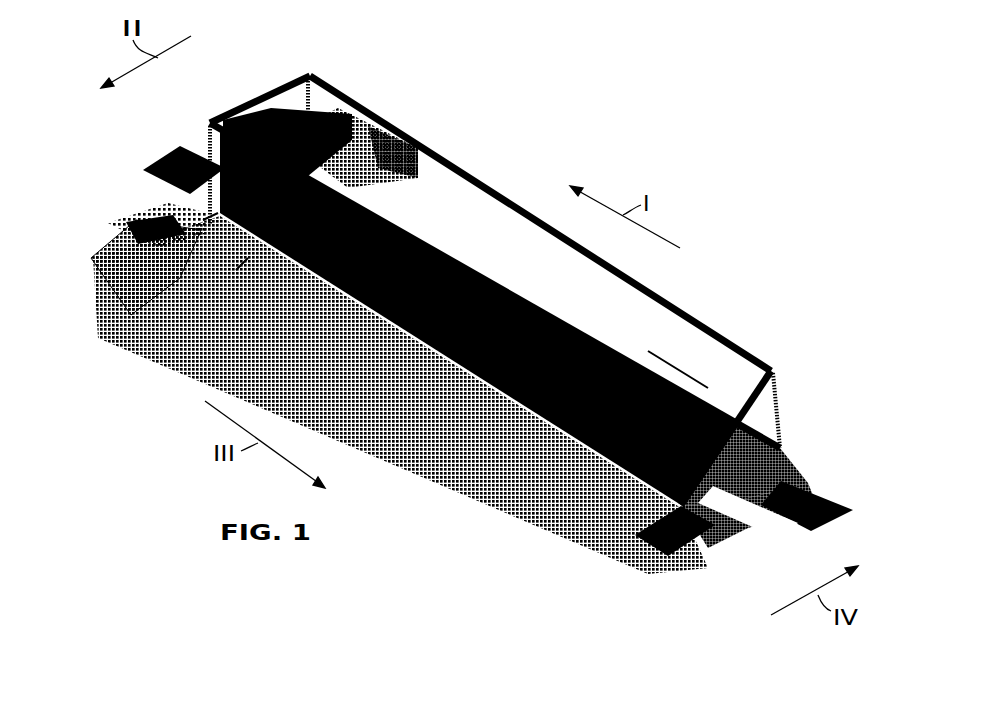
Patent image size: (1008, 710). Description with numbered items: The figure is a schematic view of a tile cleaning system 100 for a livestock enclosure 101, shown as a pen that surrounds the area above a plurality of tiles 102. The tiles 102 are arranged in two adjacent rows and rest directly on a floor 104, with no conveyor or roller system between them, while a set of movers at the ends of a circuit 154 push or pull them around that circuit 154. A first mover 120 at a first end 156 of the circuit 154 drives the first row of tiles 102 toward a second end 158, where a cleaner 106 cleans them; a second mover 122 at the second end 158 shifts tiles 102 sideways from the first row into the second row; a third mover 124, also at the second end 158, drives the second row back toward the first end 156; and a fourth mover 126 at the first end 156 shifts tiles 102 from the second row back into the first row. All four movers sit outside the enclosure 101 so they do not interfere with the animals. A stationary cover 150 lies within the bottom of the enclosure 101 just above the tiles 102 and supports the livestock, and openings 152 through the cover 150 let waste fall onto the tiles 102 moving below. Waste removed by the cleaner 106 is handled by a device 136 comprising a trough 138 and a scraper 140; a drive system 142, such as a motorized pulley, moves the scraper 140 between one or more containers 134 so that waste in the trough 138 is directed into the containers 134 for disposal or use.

The tile cleaning system 100 is at (683, 170).
The enclosure 101 is at (727, 303).
The tiles 102 is at (368, 285).
The floor 104 is at (365, 345).
The cleaner 106 is at (257, 123).
The first mover 120 is at (820, 477).
The second mover 122 is at (335, 112).
The third mover 124 is at (173, 140).
The fourth mover 126 is at (640, 543).
The containers 134 is at (383, 110).
The device 136 is at (93, 212).
The trough 138 is at (196, 222).
The scraper 140 is at (140, 200).
The drive system 142 is at (157, 265).
The cover 150 is at (443, 230).
The openings 152 is at (562, 290).
The circuit 154 is at (648, 330).
The first end 156 is at (800, 433).
The second end 158 is at (228, 264).